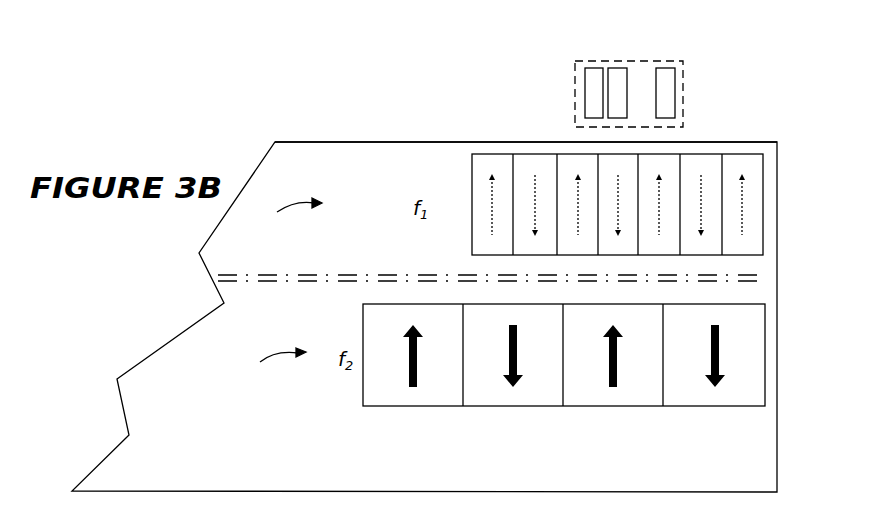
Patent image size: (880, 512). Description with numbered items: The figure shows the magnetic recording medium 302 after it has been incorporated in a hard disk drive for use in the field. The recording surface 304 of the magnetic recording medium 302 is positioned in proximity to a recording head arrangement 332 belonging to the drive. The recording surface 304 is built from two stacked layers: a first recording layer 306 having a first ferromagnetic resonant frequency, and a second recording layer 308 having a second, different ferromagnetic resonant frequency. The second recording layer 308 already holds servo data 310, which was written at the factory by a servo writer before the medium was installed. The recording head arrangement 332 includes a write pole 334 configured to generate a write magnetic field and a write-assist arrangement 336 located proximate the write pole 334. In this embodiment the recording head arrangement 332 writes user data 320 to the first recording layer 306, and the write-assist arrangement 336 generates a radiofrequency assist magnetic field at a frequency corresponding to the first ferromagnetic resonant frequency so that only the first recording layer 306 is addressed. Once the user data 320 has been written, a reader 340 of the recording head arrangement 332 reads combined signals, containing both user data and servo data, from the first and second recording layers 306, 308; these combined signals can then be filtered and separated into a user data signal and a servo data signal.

The magnetic recording medium 302 is at (777, 433).
The recording surface 304 is at (713, 141).
The first recording layer 306 is at (290, 220).
The second recording layer 308 is at (273, 371).
The servo data 310 is at (412, 407).
The user data 320 is at (472, 185).
The recording head arrangement 332 is at (575, 107).
The write pole 334 is at (593, 68).
The write-assist arrangement 336 is at (617, 68).
The reader 340 is at (665, 68).